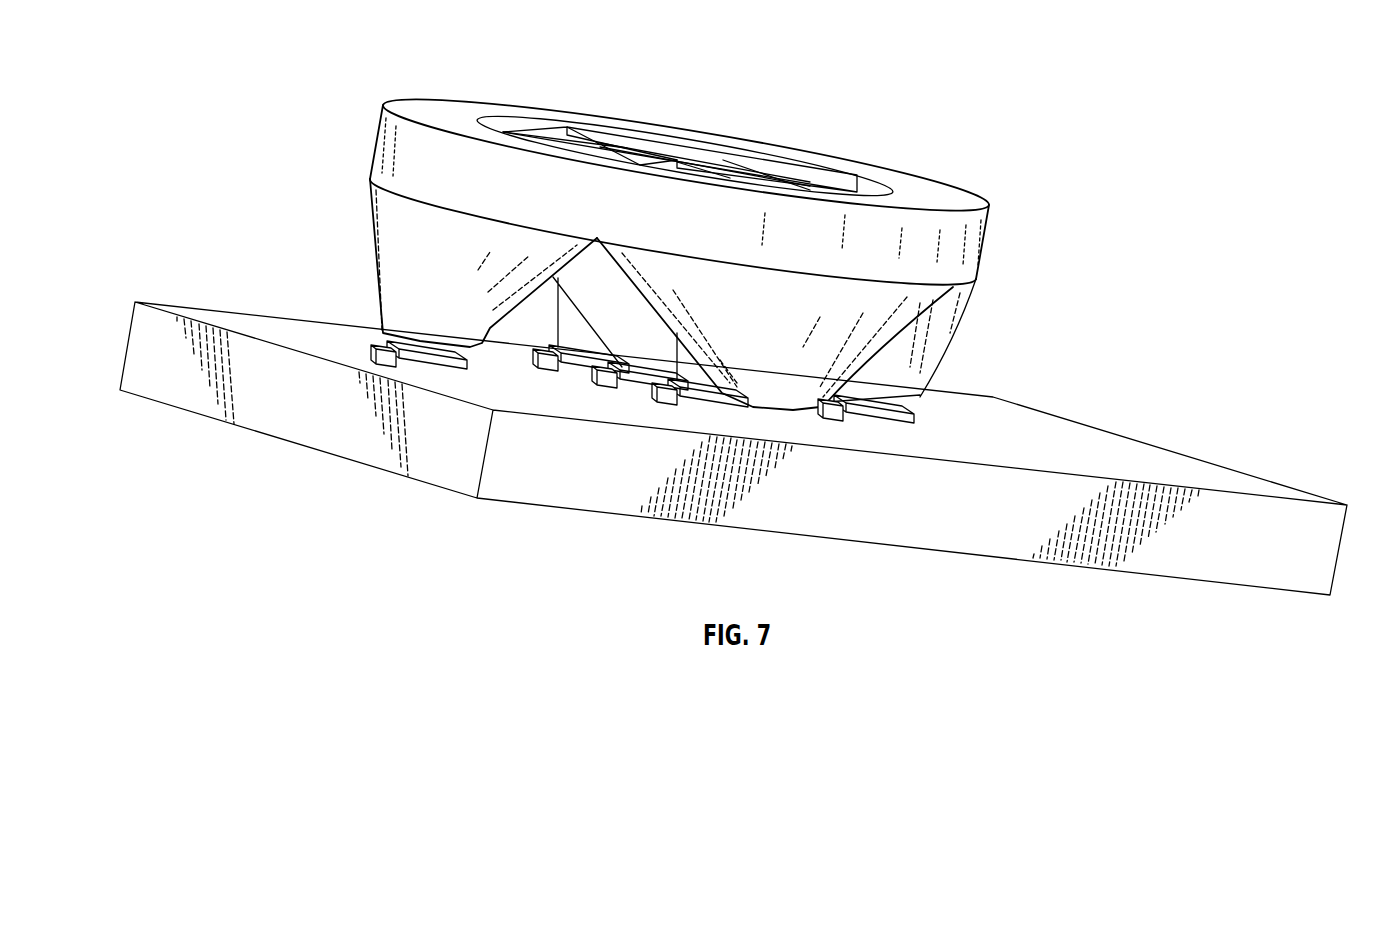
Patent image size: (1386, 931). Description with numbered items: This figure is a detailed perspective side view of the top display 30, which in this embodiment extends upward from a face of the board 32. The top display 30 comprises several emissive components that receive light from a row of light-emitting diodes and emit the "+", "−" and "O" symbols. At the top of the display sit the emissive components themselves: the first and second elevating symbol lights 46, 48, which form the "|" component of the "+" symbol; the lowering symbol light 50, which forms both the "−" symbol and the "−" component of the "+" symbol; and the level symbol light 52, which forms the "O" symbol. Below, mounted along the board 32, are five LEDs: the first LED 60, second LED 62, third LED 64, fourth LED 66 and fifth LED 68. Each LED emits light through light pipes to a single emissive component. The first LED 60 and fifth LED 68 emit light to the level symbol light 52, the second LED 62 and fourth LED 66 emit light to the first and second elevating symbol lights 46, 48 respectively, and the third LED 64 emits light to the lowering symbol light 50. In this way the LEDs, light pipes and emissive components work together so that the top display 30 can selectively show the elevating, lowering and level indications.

The top display 30 is at (410, 102).
The board 32 is at (1128, 435).
The first elevating symbol light 46 is at (627, 137).
The second elevating symbol light 48 is at (750, 174).
The lowering symbol light 50 is at (680, 154).
The level symbol light 52 is at (927, 193).
The first LED 60 is at (437, 367).
The second LED 62 is at (552, 375).
The third LED 64 is at (633, 397).
The fourth LED 66 is at (725, 437).
The fifth LED 68 is at (902, 420).